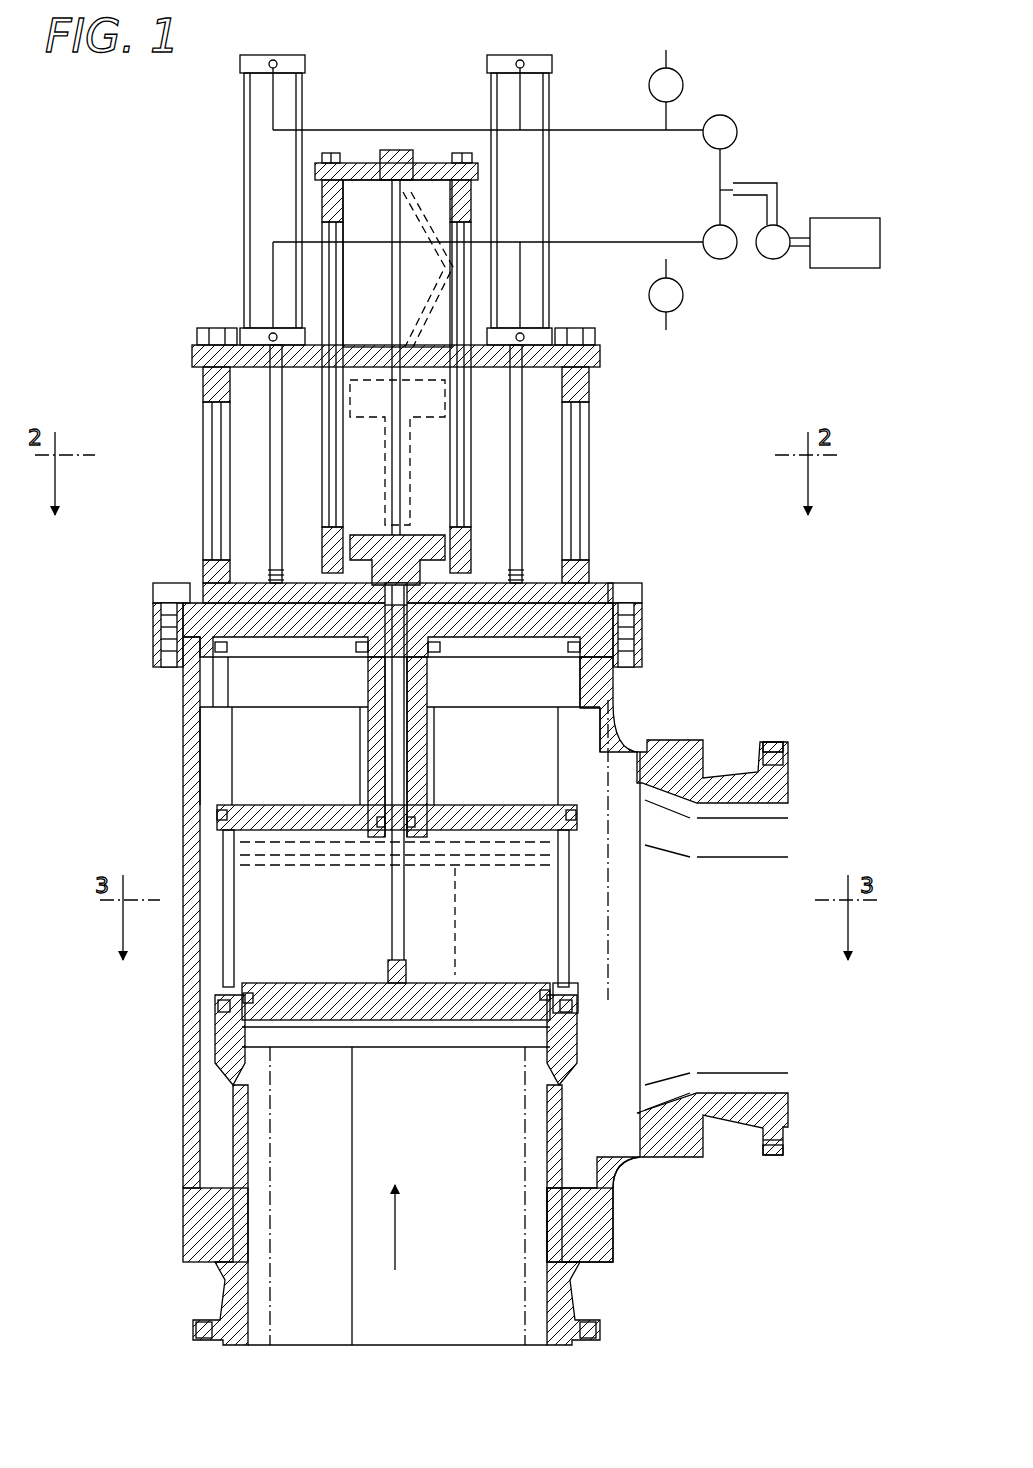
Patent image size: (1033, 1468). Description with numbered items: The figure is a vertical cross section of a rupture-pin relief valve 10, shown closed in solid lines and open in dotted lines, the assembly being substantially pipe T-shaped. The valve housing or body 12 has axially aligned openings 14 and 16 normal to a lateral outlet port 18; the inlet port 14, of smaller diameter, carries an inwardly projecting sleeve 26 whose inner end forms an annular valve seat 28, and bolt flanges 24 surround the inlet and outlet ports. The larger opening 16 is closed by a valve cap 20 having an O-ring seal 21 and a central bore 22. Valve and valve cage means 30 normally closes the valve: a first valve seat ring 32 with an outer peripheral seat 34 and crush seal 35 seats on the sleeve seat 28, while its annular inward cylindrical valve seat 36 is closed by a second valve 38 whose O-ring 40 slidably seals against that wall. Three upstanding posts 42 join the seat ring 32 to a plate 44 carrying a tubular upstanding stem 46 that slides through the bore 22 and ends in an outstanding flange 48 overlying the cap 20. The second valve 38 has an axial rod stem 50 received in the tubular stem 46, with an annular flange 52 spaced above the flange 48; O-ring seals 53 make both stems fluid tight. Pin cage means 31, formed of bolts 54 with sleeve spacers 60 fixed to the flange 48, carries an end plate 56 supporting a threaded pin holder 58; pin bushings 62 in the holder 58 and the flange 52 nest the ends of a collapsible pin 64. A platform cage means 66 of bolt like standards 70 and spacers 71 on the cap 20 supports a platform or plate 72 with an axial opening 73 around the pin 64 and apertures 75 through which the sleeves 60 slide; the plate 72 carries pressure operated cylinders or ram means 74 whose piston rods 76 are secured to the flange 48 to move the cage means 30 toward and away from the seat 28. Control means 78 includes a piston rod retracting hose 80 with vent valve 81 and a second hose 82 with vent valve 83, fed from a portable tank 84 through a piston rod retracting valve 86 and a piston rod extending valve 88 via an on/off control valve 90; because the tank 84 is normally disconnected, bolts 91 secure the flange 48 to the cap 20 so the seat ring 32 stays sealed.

The valve 10 is at (780, 635).
The valve housing or body 12 is at (630, 740).
The inlet port opening 14 is at (560, 1280).
The opening 16 is at (183, 690).
The lateral outlet port 18 is at (780, 818).
The valve cap 20 is at (613, 590).
The O-ring seal 21 is at (596, 670).
The central bore 22 is at (428, 690).
The bolt flanges 24 is at (775, 1157).
The inwardly projecting sleeve 26 is at (620, 1170).
The annular valve seat 28 is at (520, 1030).
The valve and valve cage means 30 is at (530, 805).
The pin cage means 31 is at (437, 160).
The first valve seat ring 32 is at (553, 990).
The outer peripheral seat 34 is at (217, 1005).
The crush seal 35 is at (578, 1013).
The annular inward cylindrical valve seat 36 is at (255, 1005).
The second valve 38 is at (455, 900).
The O-ring 40 is at (555, 995).
The upstanding posts 42 is at (569, 930).
The plate 44 is at (480, 800).
The tubular upstanding stem 46 is at (360, 735).
The outstanding flange 48 is at (490, 652).
The axial rod stem 50 is at (380, 890).
The annular flange 52 is at (445, 545).
The O-ring seals 53 is at (358, 652).
The bolts 54 is at (320, 190).
The end plate 56 is at (352, 163).
The pin holder 58 is at (400, 150).
The sleeve spacers 60 is at (322, 238).
The pin bushings 62 is at (390, 163).
The collapsible pin 64 is at (415, 285).
The platform cage means 66 is at (197, 345).
The bolt like standards 70 is at (210, 380).
The spacers 71 is at (589, 430).
The platform or plate 72 is at (600, 356).
The axial opening 73 is at (380, 347).
The pressure operated cylinders or ram means 74 is at (552, 100).
The apertures 75 is at (522, 370).
The piston rod 76 is at (522, 455).
The control means 78 is at (760, 140).
The piston rod retracting hose 80 is at (620, 242).
The vent valve 81 is at (680, 310).
The second hose 82 is at (600, 130).
The vent valve 83 is at (683, 78).
The portable tank 84 is at (835, 243).
The piston rod retracting valve 86 is at (732, 258).
The piston rod extending valve 88 is at (735, 122).
The on/off control valve 90 is at (787, 258).
The bolts 91 is at (270, 565).